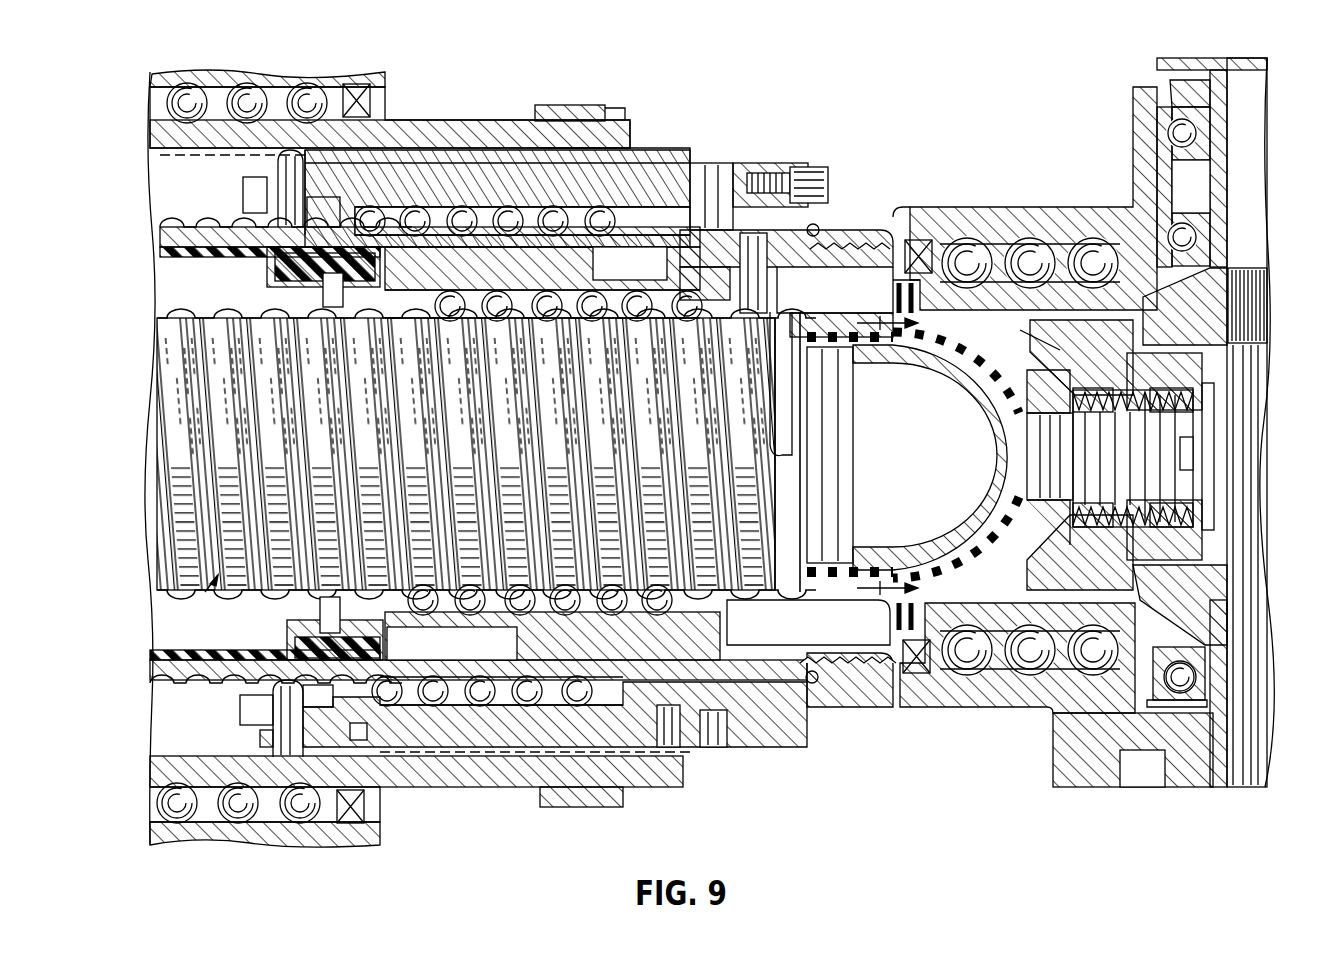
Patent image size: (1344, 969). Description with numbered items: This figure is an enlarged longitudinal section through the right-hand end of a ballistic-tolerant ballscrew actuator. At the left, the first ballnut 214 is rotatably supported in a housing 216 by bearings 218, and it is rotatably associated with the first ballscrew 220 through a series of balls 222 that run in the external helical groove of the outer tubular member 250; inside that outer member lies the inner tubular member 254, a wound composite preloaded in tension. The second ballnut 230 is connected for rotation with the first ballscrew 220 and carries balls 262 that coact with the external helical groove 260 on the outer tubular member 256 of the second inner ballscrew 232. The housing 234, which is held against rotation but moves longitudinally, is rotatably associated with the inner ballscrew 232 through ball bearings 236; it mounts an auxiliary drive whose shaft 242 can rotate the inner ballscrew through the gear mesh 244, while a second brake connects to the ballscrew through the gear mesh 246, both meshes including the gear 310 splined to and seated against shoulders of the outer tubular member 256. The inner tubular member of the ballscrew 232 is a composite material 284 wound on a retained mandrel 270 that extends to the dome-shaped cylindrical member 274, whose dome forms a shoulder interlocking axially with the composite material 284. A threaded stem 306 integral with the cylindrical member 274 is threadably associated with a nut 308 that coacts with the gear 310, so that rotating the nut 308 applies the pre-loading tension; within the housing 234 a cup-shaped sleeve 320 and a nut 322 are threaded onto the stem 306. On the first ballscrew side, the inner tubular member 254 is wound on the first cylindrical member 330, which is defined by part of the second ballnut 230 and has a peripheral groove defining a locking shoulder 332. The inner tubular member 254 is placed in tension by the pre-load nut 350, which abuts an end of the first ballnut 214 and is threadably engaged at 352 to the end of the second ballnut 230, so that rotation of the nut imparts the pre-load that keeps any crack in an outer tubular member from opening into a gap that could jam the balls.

The first ballnut 214 is at (625, 185).
The housing 216 is at (236, 72).
The bearings 218 is at (308, 92).
The first ballscrew 220 is at (195, 695).
The balls 222 is at (457, 206).
The second ballnut 230 is at (705, 645).
The second inner ballscrew 232 is at (207, 586).
The housing 234 is at (1053, 770).
The ball bearings 236 is at (1032, 240).
The shaft 242 is at (1258, 640).
The gear mesh 244 is at (1182, 300).
The gear mesh 246 is at (1170, 585).
The outer tubular member 250 is at (180, 655).
The inner tubular member 254 is at (215, 258).
The outer tubular member 256 is at (862, 618).
The external helical groove 260 is at (182, 553).
The balls 262 is at (553, 640).
The mandrel 270 is at (826, 350).
The cylindrical member 274 is at (897, 385).
The composite material 284 is at (975, 357).
The threaded stem 306 is at (1165, 440).
The nut 308 is at (1050, 515).
The gear 310 is at (1062, 338).
The cup-shaped sleeve 320 is at (1225, 370).
The nut 322 is at (1210, 525).
The first cylindrical member 330 is at (372, 632).
The locking shoulder 332 is at (292, 266).
The pre-load nut 350 is at (822, 700).
The threaded engagement 352 is at (882, 660).